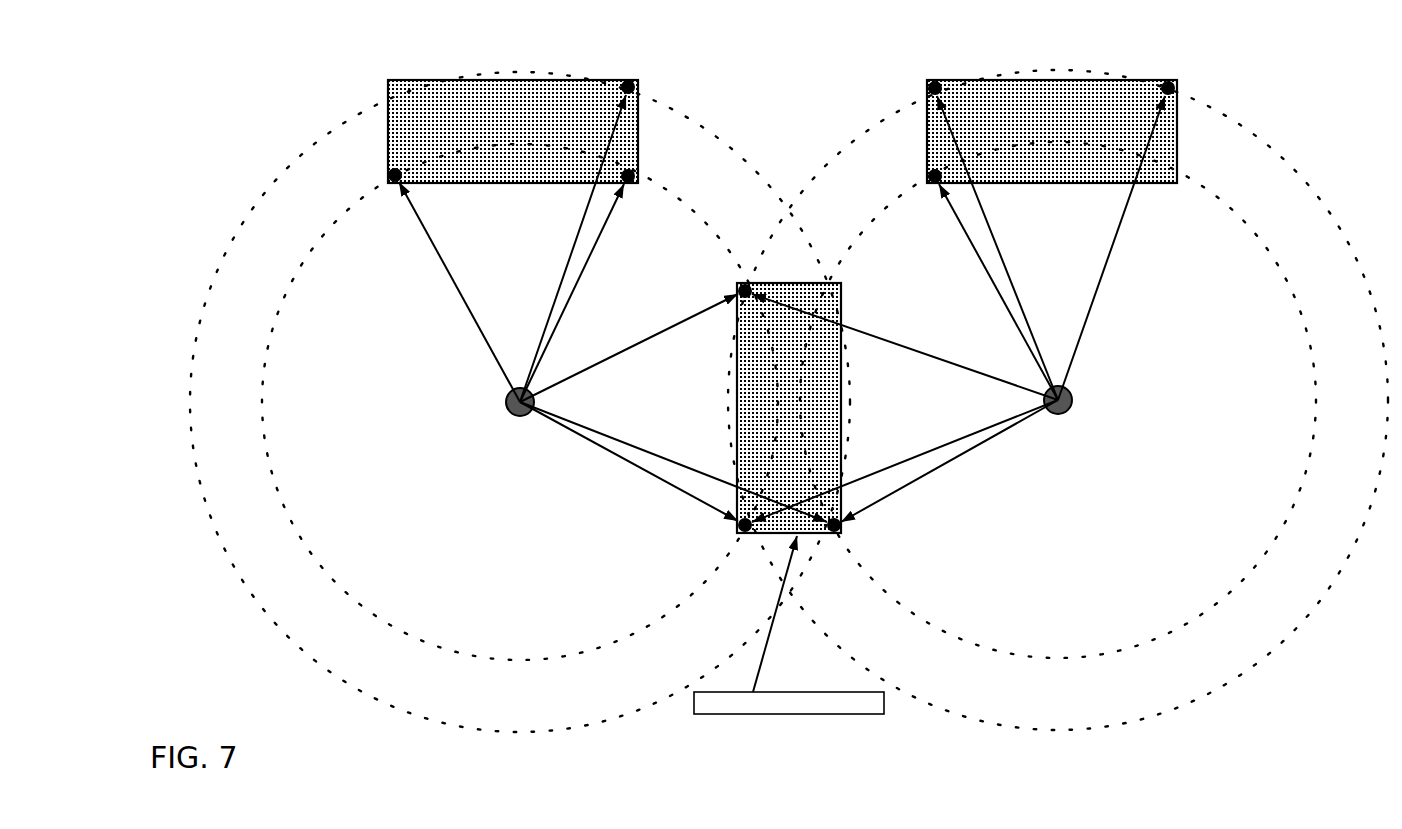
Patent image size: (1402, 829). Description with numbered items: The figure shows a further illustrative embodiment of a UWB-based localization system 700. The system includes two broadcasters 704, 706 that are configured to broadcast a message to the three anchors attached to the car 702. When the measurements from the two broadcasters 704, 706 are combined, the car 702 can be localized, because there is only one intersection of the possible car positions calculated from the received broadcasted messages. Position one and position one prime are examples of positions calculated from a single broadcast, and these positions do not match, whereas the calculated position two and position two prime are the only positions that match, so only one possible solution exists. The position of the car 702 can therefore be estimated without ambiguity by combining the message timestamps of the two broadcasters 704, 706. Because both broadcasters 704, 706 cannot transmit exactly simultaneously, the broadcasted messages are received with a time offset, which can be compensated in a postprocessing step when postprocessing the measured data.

The UWB-based localization system 700 is at (232, 126).
The car 702 is at (782, 306).
The broadcaster 704 is at (506, 398).
The broadcaster 706 is at (1072, 397).